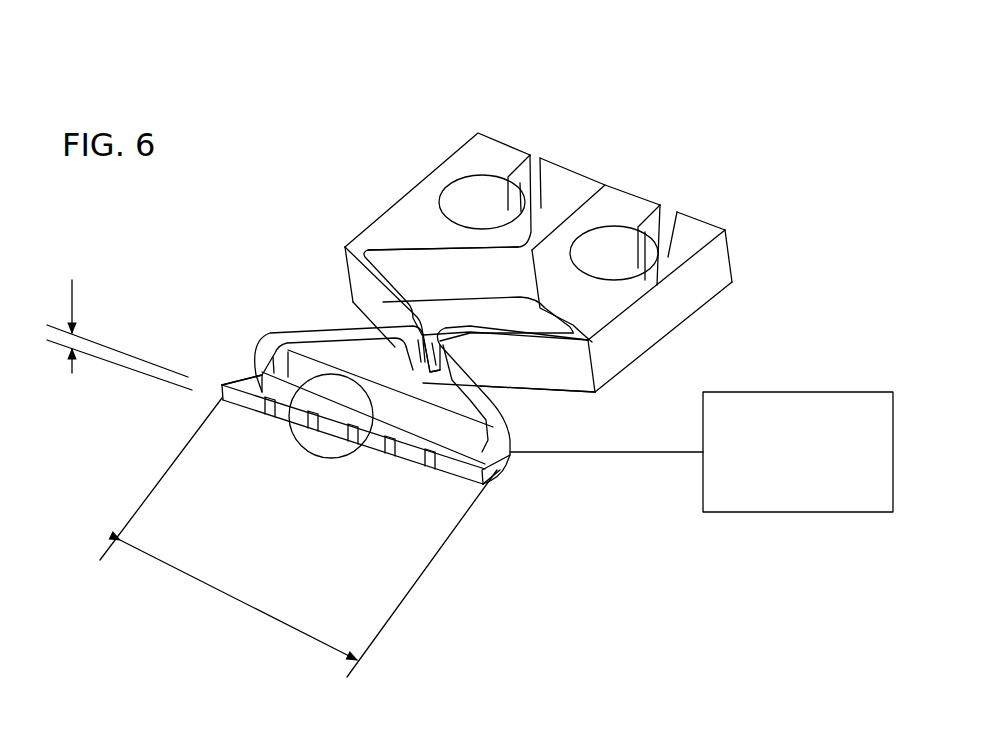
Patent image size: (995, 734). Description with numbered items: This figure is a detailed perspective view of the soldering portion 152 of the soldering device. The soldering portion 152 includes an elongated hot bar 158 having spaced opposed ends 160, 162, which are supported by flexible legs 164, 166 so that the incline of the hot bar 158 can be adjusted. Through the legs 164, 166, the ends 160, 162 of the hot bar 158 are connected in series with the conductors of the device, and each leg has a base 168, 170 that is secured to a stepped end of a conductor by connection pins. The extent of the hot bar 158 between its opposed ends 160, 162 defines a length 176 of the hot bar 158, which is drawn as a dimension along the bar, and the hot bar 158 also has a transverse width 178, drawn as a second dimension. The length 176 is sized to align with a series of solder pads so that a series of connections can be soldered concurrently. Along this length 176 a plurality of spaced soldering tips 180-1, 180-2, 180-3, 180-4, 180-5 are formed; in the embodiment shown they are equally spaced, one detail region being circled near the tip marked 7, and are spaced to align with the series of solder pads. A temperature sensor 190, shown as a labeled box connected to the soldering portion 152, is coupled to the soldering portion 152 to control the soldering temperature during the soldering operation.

The soldering portion 152 is at (757, 218).
The base of leg 170 is at (487, 143).
The base of leg 168 is at (690, 226).
The hot bar 158 is at (385, 410).
The flexible leg 166 is at (333, 330).
The notch in flange 7 is at (296, 380).
The end of hot bar 162 is at (247, 380).
The end of hot bar 160 is at (487, 472).
The flexible leg 164 is at (480, 386).
The soldering tip 180-5 is at (265, 417).
The soldering tip 180-4 is at (303, 430).
The soldering tip 180-3 is at (343, 445).
The soldering tip 180-2 is at (390, 460).
The soldering tip 180-1 is at (428, 477).
The length of hot bar 176 is at (237, 602).
The transverse width of hot bar 178 is at (119, 321).
The temperature sensor 190 is at (810, 392).